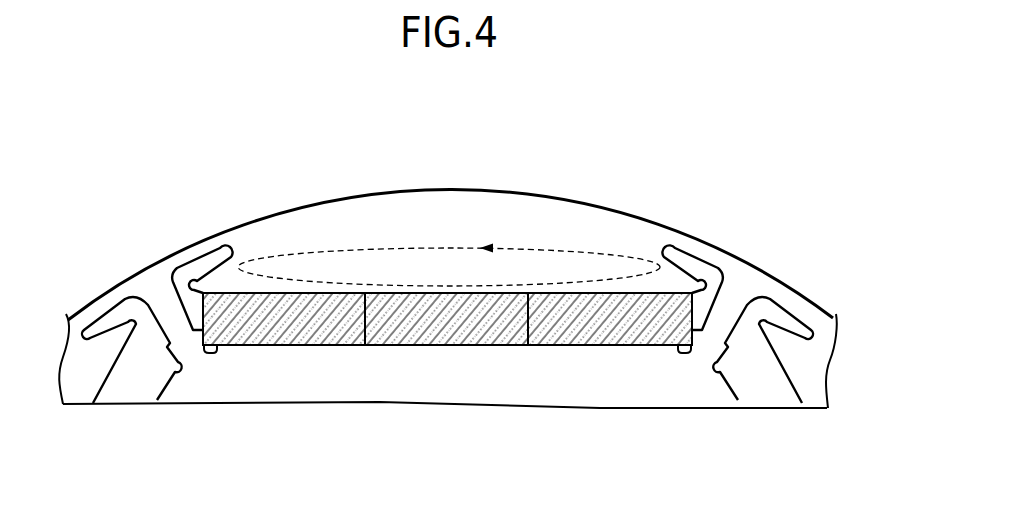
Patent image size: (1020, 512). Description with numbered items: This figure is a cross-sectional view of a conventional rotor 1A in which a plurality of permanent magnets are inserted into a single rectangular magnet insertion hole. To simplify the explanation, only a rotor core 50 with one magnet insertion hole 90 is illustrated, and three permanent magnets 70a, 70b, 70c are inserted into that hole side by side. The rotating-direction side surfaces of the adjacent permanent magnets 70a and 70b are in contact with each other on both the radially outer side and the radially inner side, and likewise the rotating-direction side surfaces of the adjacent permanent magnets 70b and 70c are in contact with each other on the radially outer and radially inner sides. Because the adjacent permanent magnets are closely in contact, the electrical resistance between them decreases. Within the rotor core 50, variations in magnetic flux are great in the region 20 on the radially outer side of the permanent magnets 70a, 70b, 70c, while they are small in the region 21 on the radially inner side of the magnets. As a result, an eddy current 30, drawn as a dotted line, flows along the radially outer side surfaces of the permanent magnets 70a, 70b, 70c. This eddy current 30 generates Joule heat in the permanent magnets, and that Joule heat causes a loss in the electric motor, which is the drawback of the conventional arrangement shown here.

The conventional rotor 1A is at (583, 150).
The region on the radially outer side 20 is at (466, 213).
The region on the radially inner side 21 is at (495, 398).
The eddy current 30 is at (383, 247).
The rotor core 50 is at (657, 228).
The permanent magnet 70a is at (280, 346).
The permanent magnet 70b is at (450, 346).
The permanent magnet 70c is at (602, 346).
The magnet insertion hole 90 is at (232, 293).